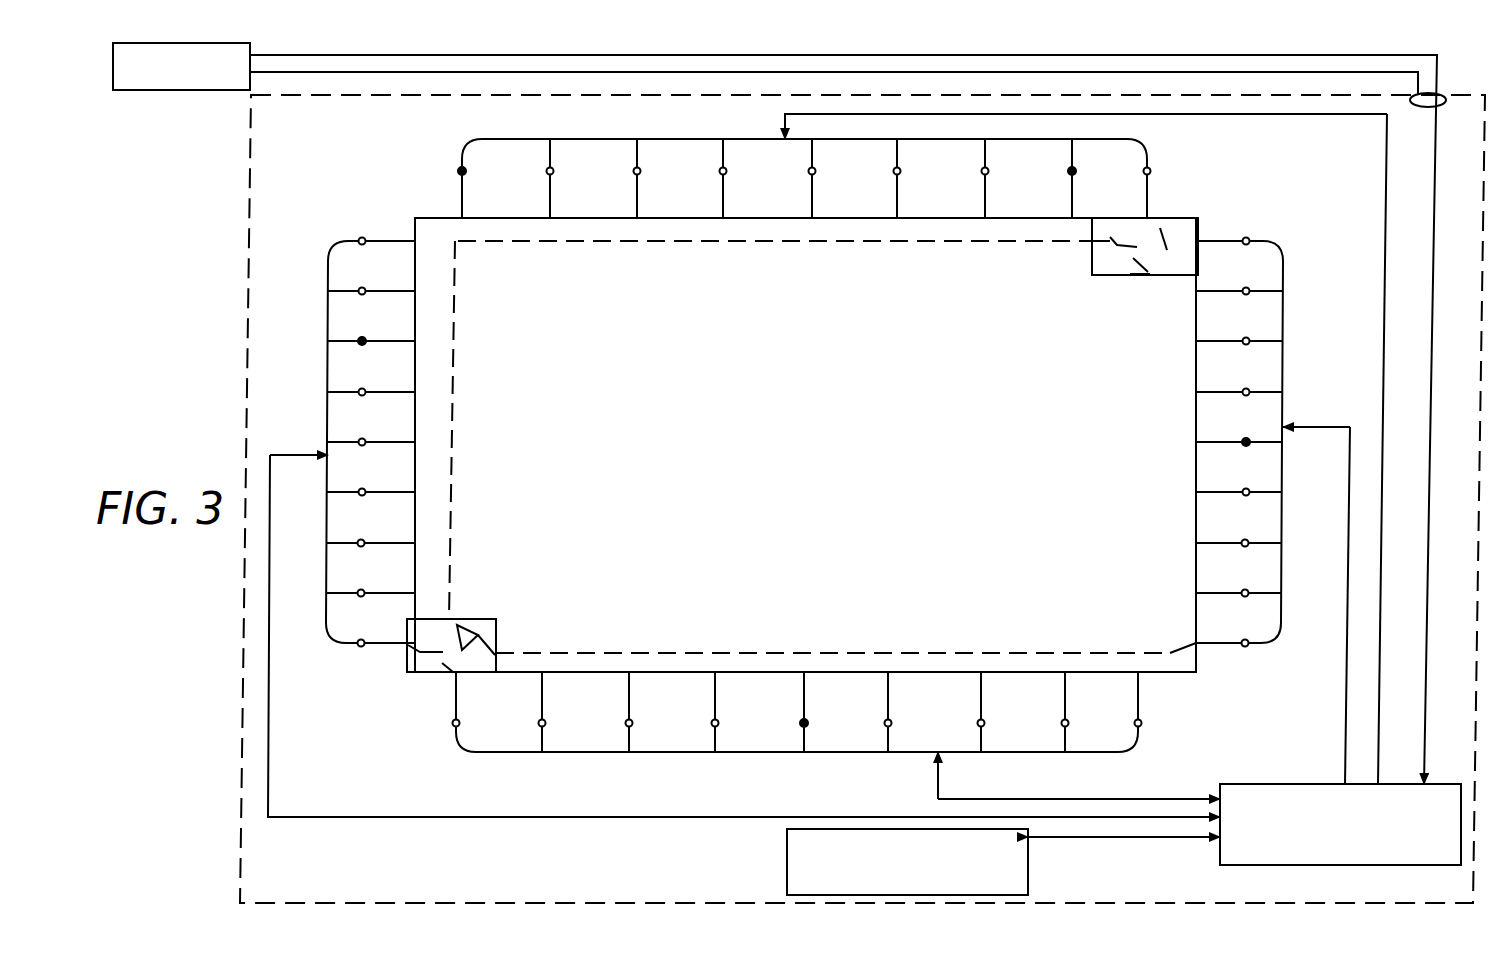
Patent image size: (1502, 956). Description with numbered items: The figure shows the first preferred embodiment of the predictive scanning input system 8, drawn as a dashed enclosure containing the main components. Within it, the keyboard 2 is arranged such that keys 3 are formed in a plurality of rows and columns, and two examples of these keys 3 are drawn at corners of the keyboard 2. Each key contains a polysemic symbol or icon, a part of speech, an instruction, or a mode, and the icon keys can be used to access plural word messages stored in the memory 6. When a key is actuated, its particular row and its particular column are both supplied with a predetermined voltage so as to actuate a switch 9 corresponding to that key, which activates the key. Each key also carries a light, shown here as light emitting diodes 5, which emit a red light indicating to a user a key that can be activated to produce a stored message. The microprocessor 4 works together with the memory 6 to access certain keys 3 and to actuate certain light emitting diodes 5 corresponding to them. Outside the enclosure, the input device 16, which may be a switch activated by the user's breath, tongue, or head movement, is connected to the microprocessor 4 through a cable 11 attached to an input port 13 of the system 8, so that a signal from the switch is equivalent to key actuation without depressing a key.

The keyboard 2 is at (473, 300).
The keys 3 is at (1173, 224).
The microprocessor 4 is at (1260, 784).
The light emitting diodes 5 is at (1185, 229).
The memory 6 is at (787, 862).
The predictive scanning input system 8 is at (238, 737).
The switch 9 is at (1110, 240).
The cable 11 is at (450, 72).
The input port 13 is at (1442, 96).
The input device 16 is at (197, 91).